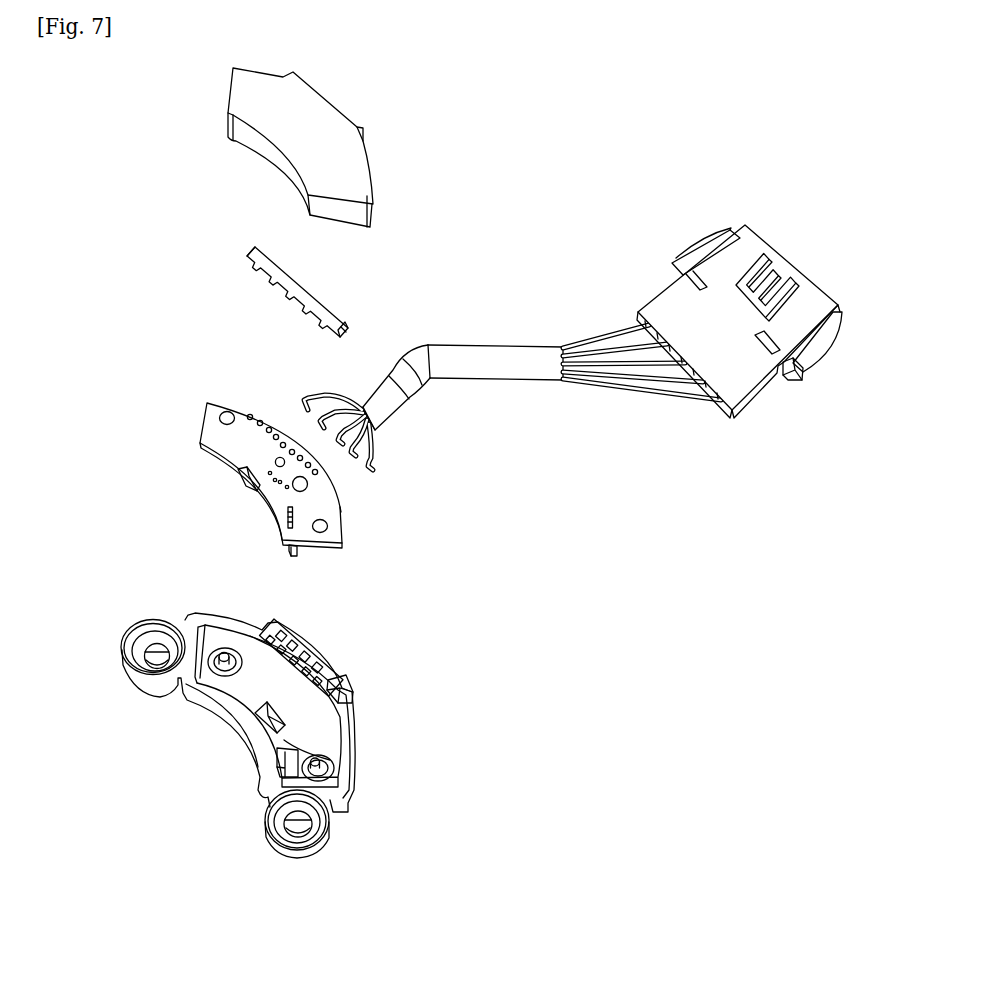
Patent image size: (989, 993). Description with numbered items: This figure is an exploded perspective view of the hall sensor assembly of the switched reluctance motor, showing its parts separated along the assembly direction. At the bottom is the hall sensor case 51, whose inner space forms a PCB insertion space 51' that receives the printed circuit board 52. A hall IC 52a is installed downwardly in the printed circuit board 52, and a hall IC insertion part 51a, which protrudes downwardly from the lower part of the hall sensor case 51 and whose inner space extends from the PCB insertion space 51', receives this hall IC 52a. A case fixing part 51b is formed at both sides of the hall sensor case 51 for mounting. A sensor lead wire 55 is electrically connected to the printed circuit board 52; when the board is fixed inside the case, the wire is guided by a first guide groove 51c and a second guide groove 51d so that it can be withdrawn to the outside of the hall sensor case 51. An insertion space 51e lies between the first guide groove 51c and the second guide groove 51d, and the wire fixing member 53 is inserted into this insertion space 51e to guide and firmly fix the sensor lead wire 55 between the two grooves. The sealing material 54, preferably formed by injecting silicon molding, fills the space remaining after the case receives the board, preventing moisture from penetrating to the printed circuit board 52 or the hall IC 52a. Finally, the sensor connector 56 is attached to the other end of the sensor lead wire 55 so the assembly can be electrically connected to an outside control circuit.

The hall sensor case 51 is at (269, 712).
The PCB insertion space 51' is at (353, 739).
The hall IC insertion part 51a is at (285, 757).
The case fixing part 51b is at (150, 648).
The first guide groove 51c is at (272, 640).
The second guide groove 51d is at (320, 663).
The insertion space 51e is at (333, 688).
The printed circuit board 52 is at (330, 500).
The hall IC 52a is at (238, 482).
The wire fixing member 53 is at (300, 283).
The sealing material 54 is at (365, 162).
The sensor lead wire 55 is at (380, 443).
The sensor connector 56 is at (745, 390).